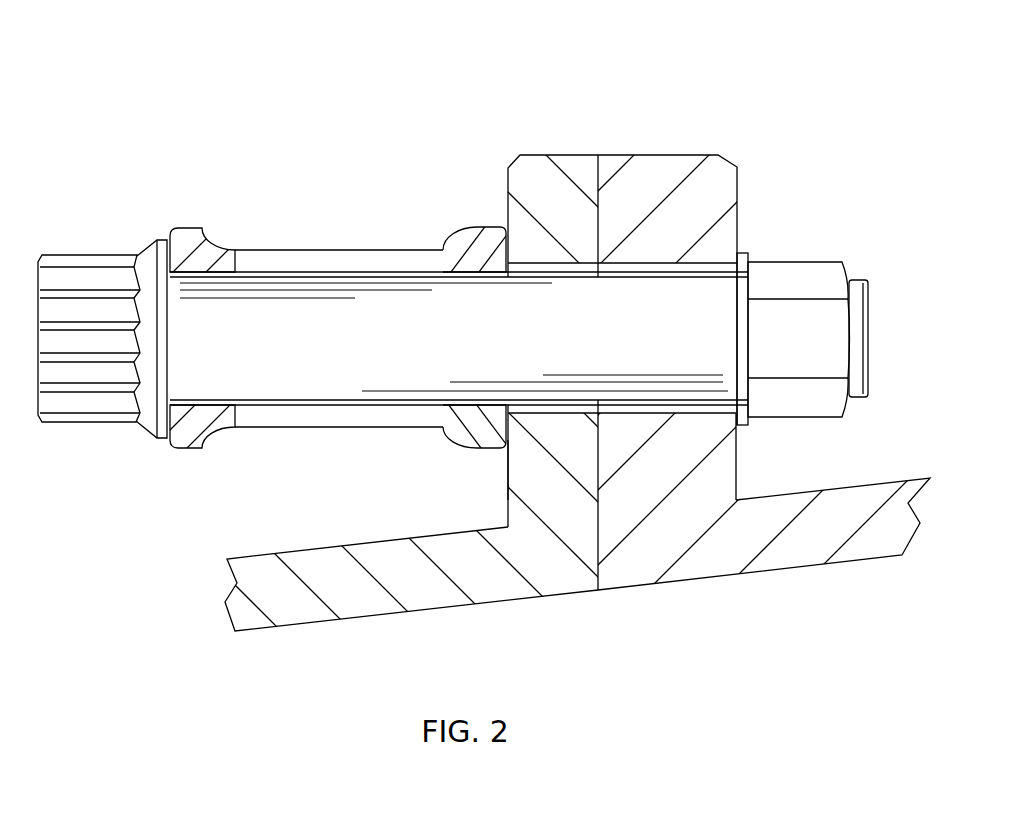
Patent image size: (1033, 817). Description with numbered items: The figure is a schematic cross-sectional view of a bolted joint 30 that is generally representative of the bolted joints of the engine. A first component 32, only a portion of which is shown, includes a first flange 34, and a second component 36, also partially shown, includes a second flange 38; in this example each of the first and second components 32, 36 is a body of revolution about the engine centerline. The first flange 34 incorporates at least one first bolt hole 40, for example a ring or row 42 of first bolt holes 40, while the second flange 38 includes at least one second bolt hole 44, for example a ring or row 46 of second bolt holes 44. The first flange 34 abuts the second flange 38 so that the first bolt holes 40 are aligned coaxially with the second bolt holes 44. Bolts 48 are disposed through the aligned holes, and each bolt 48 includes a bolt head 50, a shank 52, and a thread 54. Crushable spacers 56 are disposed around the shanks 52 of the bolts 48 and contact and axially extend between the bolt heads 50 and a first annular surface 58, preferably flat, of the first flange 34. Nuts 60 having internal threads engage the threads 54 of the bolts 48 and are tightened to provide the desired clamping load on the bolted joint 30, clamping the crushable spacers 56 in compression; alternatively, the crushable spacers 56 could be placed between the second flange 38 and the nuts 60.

The bolted joint 30 is at (531, 95).
The first component 32 is at (440, 597).
The first flange 34 is at (520, 505).
The second component 36 is at (805, 555).
The second flange 38 is at (722, 475).
The first bolt hole 40 is at (535, 263).
The ring or row of first bolt holes 42 is at (553, 262).
The second bolt hole 44 is at (707, 264).
The ring or row of second bolt holes 46 is at (665, 262).
The bolt 48 is at (92, 442).
The bolt head 50 is at (88, 262).
The shank 52 is at (436, 351).
The thread 54 is at (857, 283).
The crushable spacer 56 is at (223, 448).
The first annular surface 58 is at (508, 470).
The nut 60 is at (807, 273).